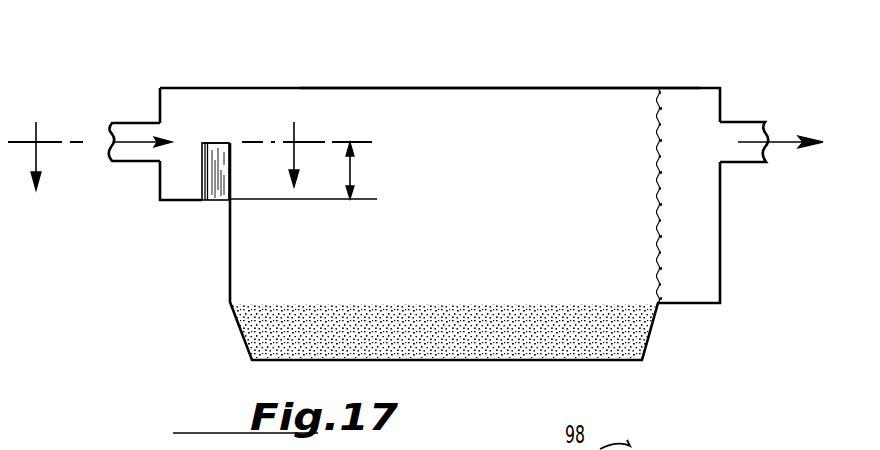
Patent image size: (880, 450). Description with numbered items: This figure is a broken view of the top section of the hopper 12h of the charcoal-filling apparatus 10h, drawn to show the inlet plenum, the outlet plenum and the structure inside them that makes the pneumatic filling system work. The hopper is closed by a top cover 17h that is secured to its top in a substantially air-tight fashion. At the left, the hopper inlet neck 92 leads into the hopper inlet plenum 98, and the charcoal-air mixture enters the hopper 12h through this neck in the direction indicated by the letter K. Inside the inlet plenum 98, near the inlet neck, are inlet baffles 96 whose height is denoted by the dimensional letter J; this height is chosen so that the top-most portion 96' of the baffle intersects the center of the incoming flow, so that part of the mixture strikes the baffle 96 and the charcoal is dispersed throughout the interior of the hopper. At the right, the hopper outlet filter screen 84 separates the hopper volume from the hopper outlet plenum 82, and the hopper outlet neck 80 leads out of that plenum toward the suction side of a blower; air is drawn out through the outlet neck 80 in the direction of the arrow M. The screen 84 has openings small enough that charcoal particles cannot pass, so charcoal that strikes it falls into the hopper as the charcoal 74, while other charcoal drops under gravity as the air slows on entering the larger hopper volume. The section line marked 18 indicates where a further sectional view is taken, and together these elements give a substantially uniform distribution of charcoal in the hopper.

The apparatus 10h is at (396, 87).
The top cover 17h is at (490, 88).
The hopper 12h is at (564, 210).
The hopper inlet neck 92 is at (131, 128).
The hopper inlet plenum 98 is at (187, 110).
The inlet baffle 96 is at (234, 171).
The top-most portion of the baffle 96' is at (227, 121).
The hopper outlet filter screen 84 is at (654, 121).
The hopper outlet plenum 82 is at (688, 108).
The hopper outlet neck 80 is at (745, 152).
The charcoal 74 is at (412, 325).
The section line 18 is at (190, 141).
The baffle height J is at (352, 170).
The inlet flow direction K is at (140, 150).
The outlet flow direction M is at (778, 138).